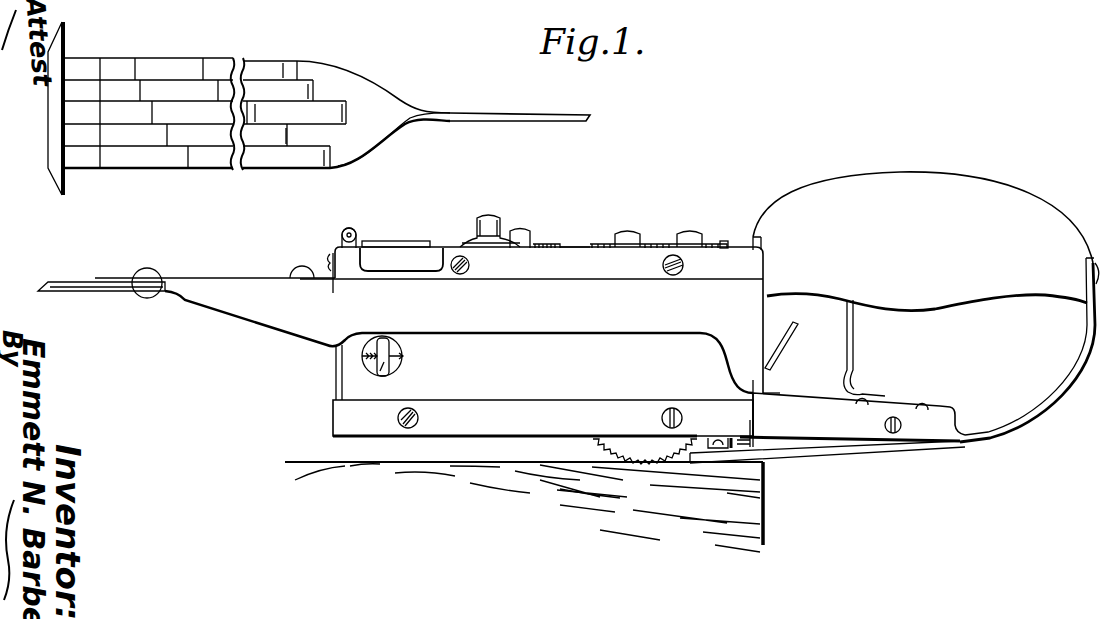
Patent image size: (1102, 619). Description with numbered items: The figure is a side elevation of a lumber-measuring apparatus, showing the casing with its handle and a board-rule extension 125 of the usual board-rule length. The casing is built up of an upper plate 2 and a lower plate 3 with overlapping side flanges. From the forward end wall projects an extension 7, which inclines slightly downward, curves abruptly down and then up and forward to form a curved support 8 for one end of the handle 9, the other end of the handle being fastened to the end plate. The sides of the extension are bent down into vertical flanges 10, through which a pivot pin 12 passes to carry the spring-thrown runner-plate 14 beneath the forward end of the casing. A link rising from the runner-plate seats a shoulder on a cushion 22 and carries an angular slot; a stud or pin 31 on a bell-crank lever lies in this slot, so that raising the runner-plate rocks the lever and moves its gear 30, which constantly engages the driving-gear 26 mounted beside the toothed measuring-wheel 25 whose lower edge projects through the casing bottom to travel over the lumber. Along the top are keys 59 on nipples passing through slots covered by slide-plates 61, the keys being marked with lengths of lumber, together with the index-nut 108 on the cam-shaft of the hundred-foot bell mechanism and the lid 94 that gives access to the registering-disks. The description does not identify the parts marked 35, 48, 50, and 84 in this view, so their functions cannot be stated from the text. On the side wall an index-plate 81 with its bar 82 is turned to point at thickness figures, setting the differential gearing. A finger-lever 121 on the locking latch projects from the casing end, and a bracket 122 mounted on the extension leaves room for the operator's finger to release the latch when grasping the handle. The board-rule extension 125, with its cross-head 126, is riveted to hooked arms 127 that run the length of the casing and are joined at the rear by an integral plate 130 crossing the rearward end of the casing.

The upper plate 2 is at (575, 246).
The lower plate 3 is at (517, 437).
The extension 7 is at (811, 397).
The curved support 8 is at (1029, 350).
The handle 9 is at (923, 241).
The vertical flanges 10 is at (852, 417).
The pivot pin 12 is at (901, 428).
The runner-plate 14 is at (827, 452).
The cushion 22 is at (323, 158).
The measuring-wheel 25 is at (645, 451).
The driving-gear 26 is at (286, 136).
The gear 30 is at (256, 113).
The stud or pin 31 is at (342, 113).
The gauge segment 35 is at (310, 92).
The gauge segment 48 is at (284, 71).
The knob 50 is at (626, 231).
The keys 59 is at (525, 232).
The slide-plates 61 is at (723, 237).
The index-plate 81 is at (403, 366).
The bar 82 is at (380, 372).
The cup 84 is at (401, 248).
The lid 94 is at (438, 246).
The index-nut 108 is at (496, 212).
The finger-lever 121 is at (790, 346).
The bracket 122 is at (864, 348).
The board-rule extension 125 is at (286, 36).
The cross-head 126 is at (50, 105).
The arms 127 is at (531, 318).
The integral plate 130 is at (215, 280).